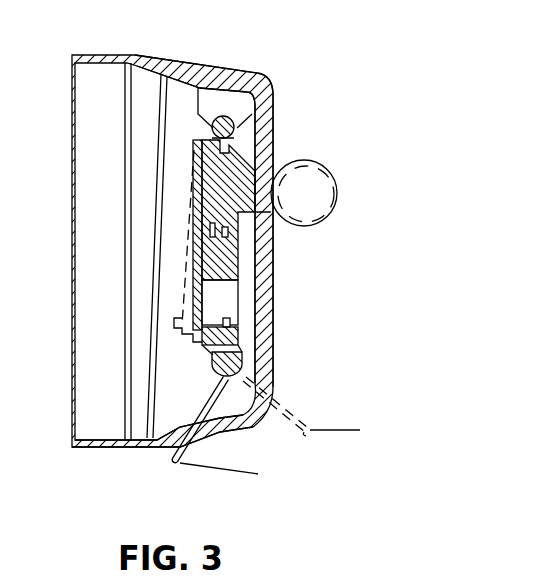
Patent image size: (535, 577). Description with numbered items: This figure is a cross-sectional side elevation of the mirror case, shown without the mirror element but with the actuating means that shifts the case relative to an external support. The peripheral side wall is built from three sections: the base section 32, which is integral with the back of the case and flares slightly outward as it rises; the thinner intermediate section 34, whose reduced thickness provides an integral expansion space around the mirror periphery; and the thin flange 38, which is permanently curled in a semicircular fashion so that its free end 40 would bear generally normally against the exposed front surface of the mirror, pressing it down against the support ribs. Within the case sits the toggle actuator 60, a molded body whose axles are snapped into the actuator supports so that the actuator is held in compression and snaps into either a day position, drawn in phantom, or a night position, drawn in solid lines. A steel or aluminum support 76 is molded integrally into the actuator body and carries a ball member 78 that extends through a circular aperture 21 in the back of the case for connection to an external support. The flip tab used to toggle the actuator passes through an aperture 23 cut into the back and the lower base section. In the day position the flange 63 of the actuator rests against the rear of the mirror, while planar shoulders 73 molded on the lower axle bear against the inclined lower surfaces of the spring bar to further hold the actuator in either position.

The circular aperture 21 is at (268, 216).
The aperture 23 is at (195, 420).
The base section 32 is at (231, 66).
The intermediate section 34 is at (161, 126).
The flange 38 is at (110, 172).
The free end of flange 40 is at (72, 312).
The toggle actuator 60 is at (193, 147).
The flange 63 is at (173, 325).
The planar shoulders 73 is at (210, 375).
The support 76 is at (260, 142).
The ball member 78 is at (327, 164).